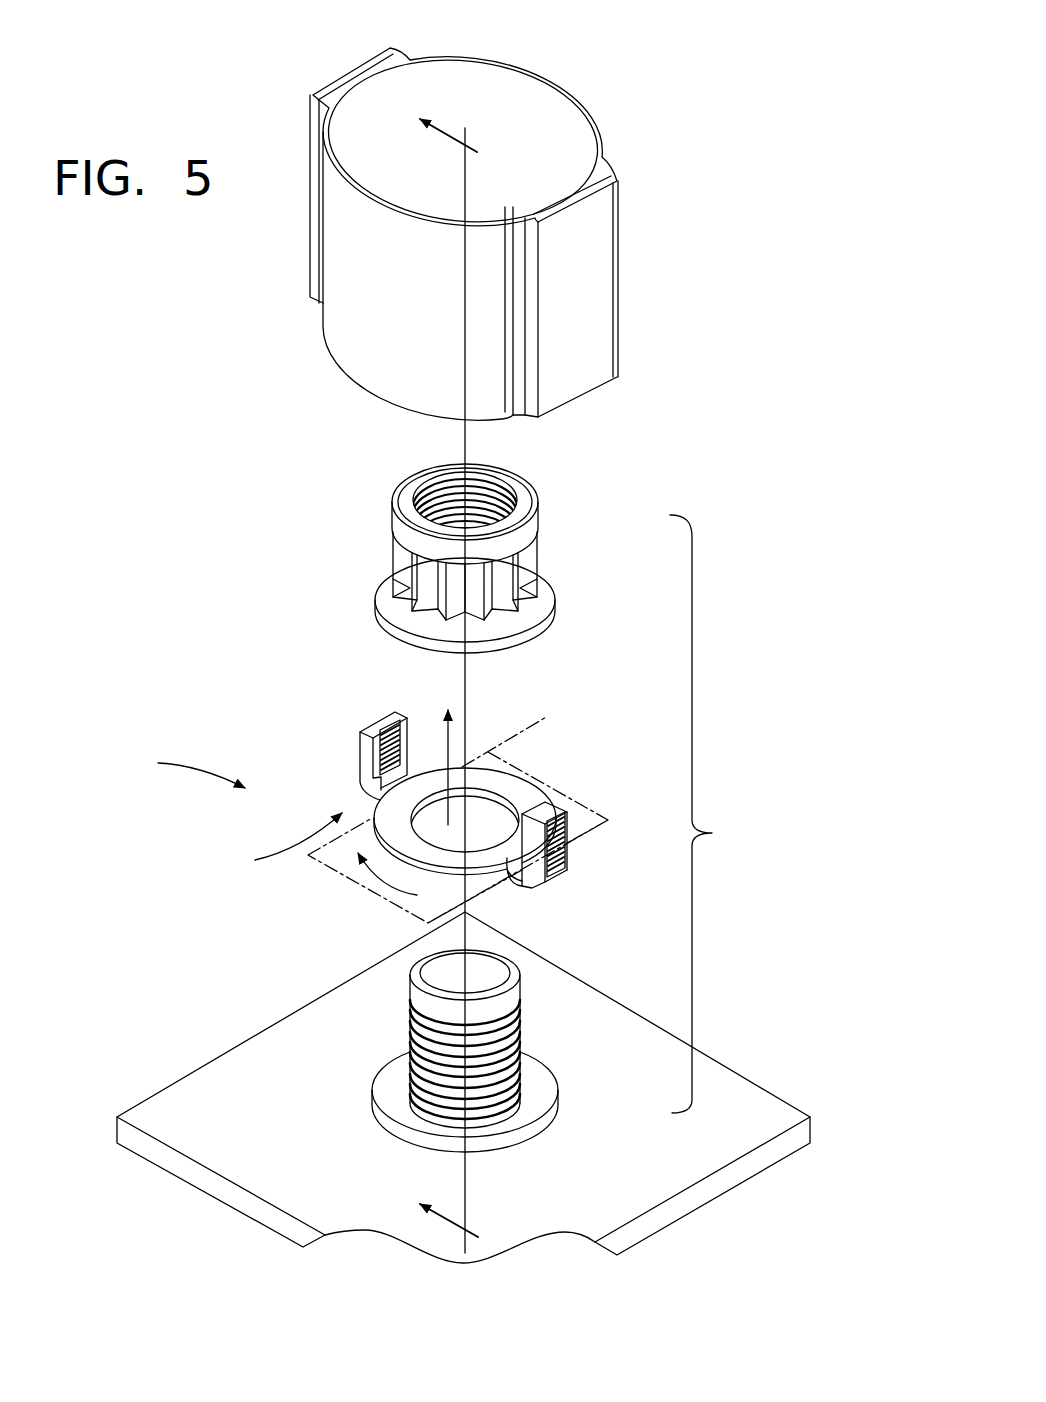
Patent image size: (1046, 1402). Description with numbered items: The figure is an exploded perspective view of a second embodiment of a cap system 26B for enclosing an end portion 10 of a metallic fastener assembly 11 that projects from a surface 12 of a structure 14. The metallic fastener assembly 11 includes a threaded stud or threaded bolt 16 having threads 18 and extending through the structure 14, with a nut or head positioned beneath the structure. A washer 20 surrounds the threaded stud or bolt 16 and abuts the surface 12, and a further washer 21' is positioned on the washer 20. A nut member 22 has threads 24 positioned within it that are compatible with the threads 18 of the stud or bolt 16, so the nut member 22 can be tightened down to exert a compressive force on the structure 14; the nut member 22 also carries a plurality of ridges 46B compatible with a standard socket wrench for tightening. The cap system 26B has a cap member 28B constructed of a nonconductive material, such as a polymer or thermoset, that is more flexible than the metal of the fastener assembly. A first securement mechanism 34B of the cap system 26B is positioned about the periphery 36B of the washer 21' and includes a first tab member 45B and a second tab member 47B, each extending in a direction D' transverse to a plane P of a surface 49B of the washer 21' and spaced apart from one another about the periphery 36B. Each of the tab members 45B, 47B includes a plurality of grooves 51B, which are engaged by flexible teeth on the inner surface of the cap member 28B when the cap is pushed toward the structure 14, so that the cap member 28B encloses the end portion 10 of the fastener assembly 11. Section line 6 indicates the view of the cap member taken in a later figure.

The end portion 10 is at (713, 830).
The metallic fastener assembly 11 is at (188, 769).
The surface 12 is at (747, 1098).
The structure 14 is at (783, 1140).
The threaded stud or bolt 16 is at (460, 1039).
The threads 18 is at (412, 1023).
The washer 20 is at (397, 1123).
The washer 21' is at (434, 803).
The nut member 22 is at (448, 547).
The threads 24 is at (455, 502).
The cap system 26B is at (532, 211).
The cap member 28B is at (562, 157).
The first securement mechanism 34B is at (272, 843).
The periphery 36B is at (383, 885).
The first tab member 45B is at (560, 832).
The plurality of ridges 46B is at (420, 593).
The second tab member 47B is at (363, 745).
The surface 49B is at (383, 822).
The plurality of grooves 51B is at (562, 853).
The section line 6 is at (449, 662).
The direction D' is at (406, 751).
The plane P is at (458, 811).